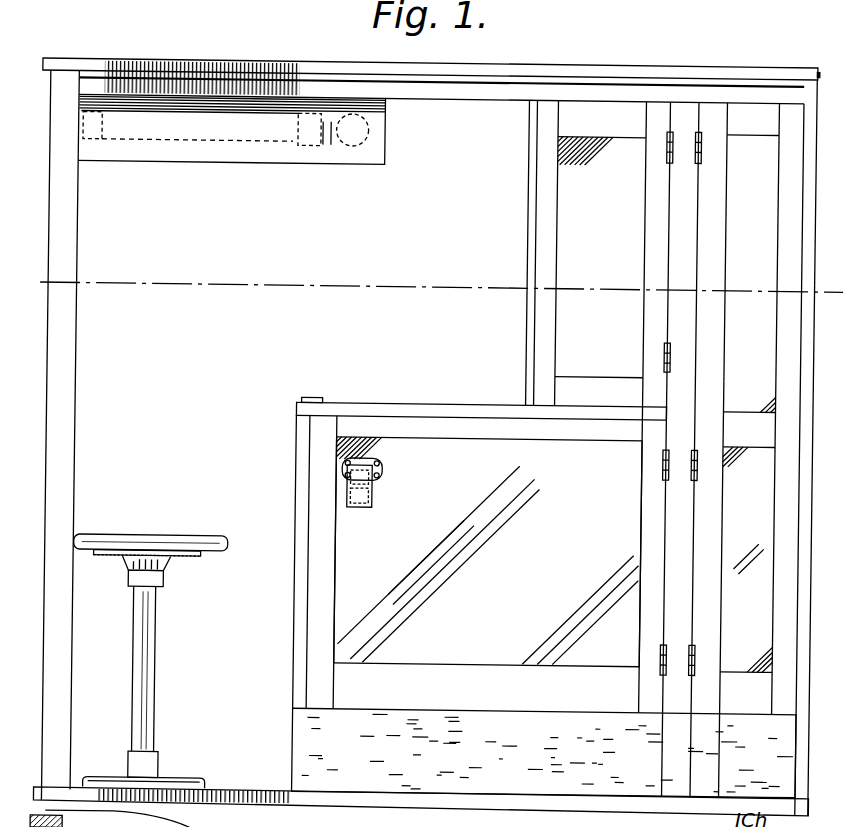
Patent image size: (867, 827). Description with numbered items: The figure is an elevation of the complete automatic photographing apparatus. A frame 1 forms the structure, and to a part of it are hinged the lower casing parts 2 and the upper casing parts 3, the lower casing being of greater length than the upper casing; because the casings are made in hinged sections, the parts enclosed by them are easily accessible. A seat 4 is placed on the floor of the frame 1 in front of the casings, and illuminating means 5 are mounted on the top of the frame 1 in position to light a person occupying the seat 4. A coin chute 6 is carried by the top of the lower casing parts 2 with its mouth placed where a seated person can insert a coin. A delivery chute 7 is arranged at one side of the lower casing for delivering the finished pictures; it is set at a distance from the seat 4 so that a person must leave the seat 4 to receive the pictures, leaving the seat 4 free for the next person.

The frame 1 is at (256, 789).
The lower casing parts 2 is at (324, 510).
The upper casing parts 3 is at (550, 237).
The seat 4 is at (156, 661).
The illuminating means 5 is at (244, 127).
The coin chute 6 is at (316, 393).
The delivery chute 7 is at (378, 482).